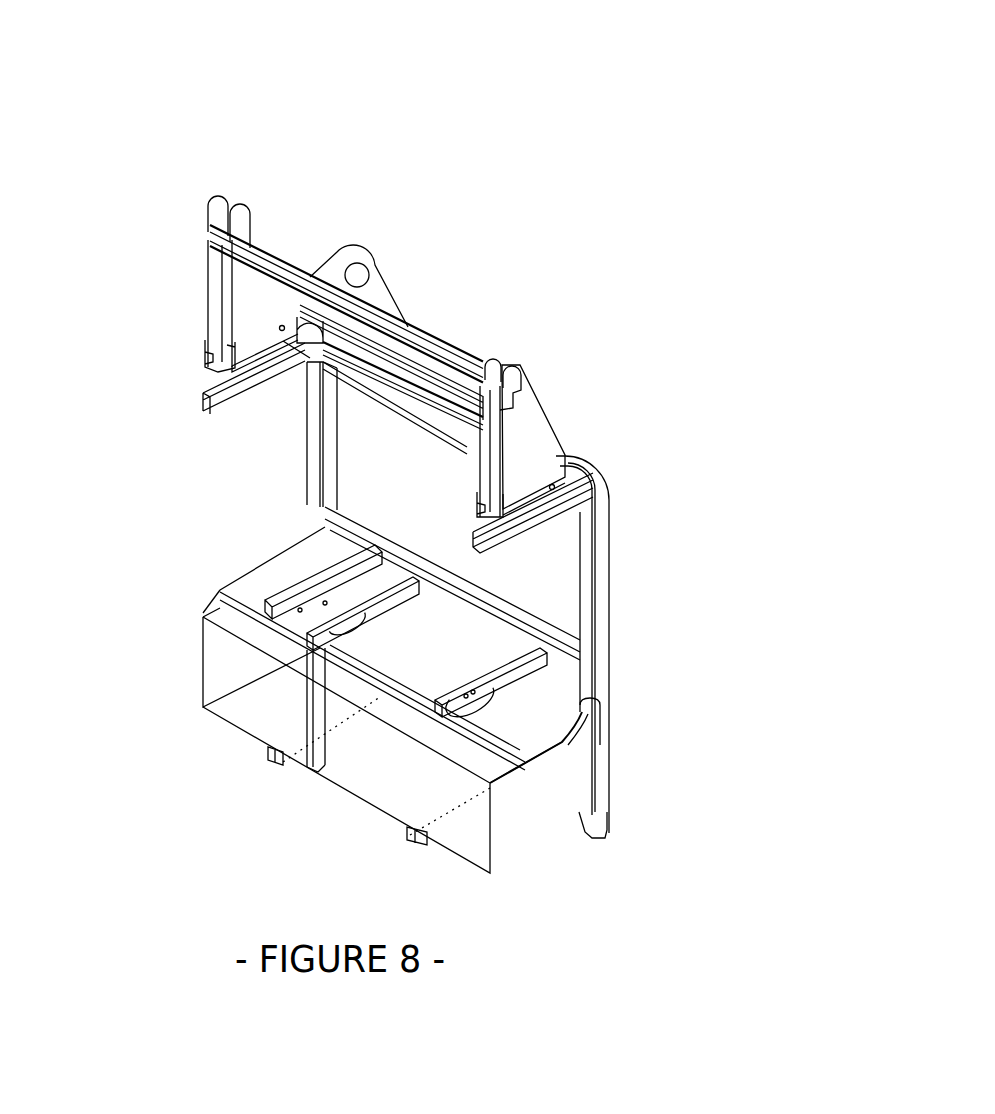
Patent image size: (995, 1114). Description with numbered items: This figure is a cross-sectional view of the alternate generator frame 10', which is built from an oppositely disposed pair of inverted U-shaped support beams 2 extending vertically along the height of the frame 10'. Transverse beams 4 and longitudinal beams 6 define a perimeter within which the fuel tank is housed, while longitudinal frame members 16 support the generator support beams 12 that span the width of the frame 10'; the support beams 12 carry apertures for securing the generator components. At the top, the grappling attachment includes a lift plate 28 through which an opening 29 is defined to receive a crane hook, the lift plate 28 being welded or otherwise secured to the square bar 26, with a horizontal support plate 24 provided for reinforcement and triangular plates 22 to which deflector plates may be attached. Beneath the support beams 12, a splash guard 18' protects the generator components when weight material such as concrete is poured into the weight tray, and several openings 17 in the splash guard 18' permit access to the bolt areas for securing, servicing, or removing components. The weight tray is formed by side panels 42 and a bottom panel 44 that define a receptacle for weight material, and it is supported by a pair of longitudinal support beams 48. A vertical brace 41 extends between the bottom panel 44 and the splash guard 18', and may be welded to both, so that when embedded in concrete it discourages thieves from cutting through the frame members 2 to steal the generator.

The inverted U-shaped support beam 2 is at (606, 578).
The transverse beam 4 is at (225, 400).
The longitudinal beam 6 is at (423, 408).
The generator frame 10' is at (687, 53).
The generator support beam 12 is at (283, 617).
The longitudinal frame member 16 is at (345, 518).
The opening 17 is at (480, 706).
The splash guard 18' is at (492, 638).
The triangular plate 22 is at (530, 457).
The horizontal support plate 24 is at (433, 377).
The square bar 26 is at (245, 242).
The lift plate 28 is at (383, 290).
The opening 29 is at (360, 267).
The vertical brace 41 is at (320, 712).
The side panel 42 is at (553, 813).
The bottom panel 44 is at (473, 842).
The longitudinal support beam 48 is at (407, 837).